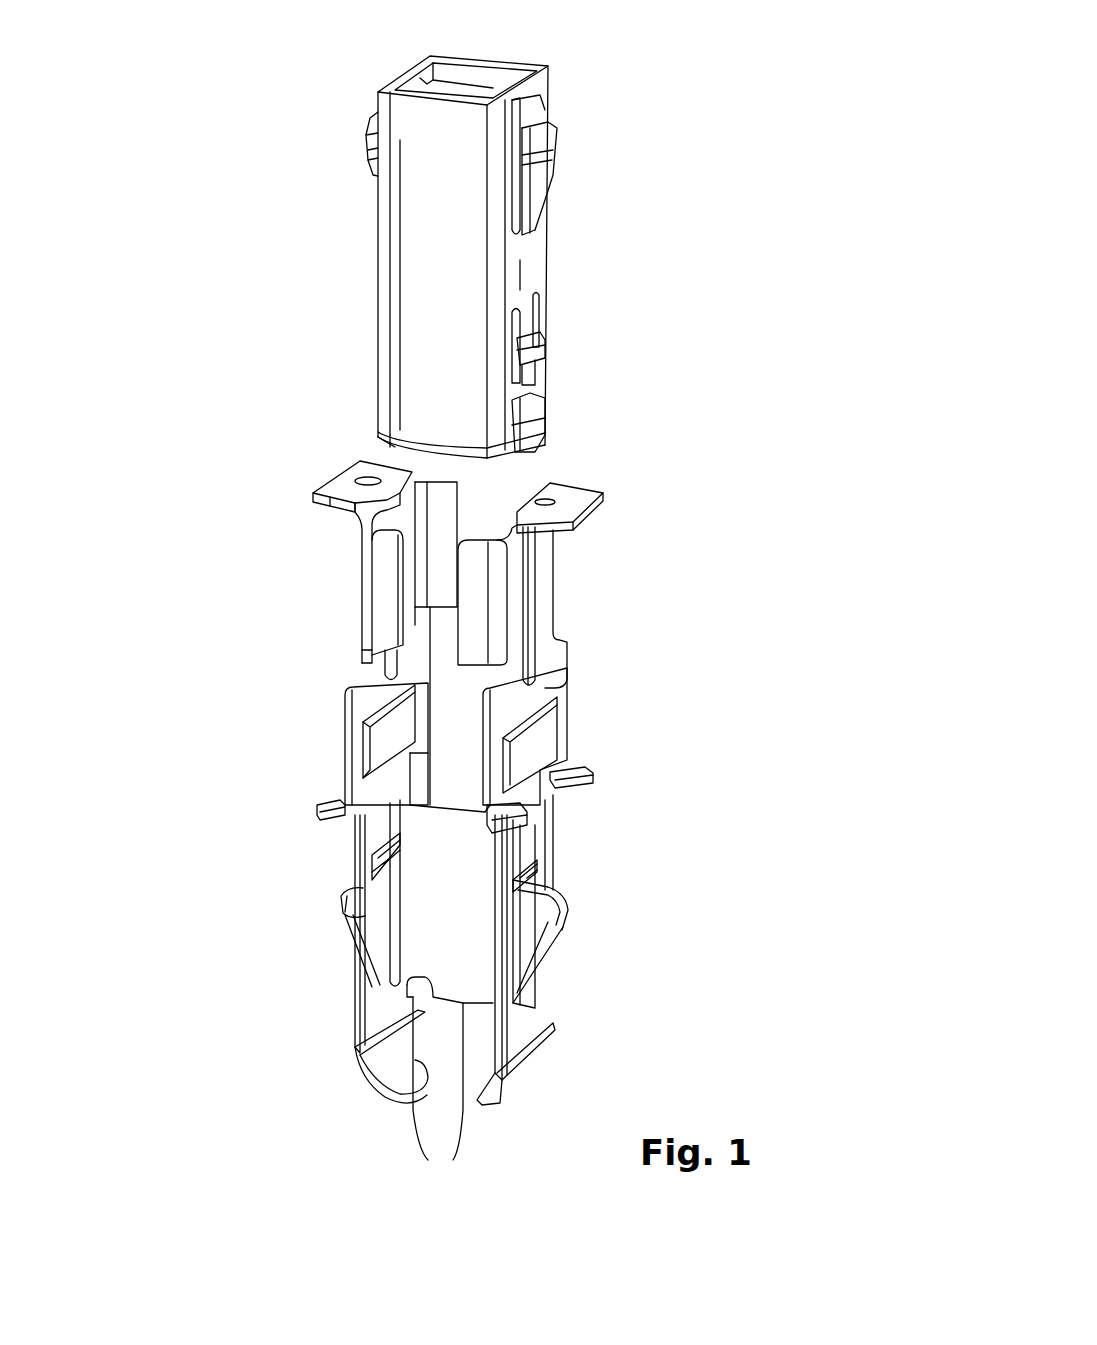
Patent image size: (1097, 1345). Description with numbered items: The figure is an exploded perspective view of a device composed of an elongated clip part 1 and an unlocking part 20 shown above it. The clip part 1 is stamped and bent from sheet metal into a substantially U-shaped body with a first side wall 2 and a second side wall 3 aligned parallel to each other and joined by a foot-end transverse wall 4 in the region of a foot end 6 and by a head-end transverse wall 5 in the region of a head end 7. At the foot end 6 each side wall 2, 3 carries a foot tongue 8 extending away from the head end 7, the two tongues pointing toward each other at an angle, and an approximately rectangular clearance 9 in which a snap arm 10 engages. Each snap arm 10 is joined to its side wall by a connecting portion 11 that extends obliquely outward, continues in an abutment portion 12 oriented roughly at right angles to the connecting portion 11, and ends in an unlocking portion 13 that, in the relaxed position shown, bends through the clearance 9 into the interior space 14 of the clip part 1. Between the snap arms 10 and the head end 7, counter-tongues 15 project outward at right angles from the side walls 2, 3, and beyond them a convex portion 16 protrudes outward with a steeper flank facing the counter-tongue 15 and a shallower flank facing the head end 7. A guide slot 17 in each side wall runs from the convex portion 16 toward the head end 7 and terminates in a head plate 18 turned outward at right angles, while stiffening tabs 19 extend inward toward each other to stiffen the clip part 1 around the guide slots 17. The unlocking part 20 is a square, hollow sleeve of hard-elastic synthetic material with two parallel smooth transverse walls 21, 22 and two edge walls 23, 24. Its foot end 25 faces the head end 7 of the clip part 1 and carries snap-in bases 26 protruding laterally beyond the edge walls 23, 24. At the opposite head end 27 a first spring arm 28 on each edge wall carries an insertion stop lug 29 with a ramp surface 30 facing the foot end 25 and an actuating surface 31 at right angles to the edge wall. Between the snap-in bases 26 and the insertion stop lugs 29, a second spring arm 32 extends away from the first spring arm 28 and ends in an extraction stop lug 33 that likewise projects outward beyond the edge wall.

The clip part 1 is at (173, 708).
The first side wall 2 is at (363, 683).
The second side wall 3 is at (525, 697).
The foot-end transverse wall 4 is at (448, 1050).
The head-end transverse wall 5 is at (470, 497).
The foot end 6 is at (262, 1088).
The head end 7 is at (230, 492).
The foot tongue 8 is at (430, 1067).
The clearance 9 is at (387, 835).
The snap arm 10 is at (335, 907).
The connecting portion 11 is at (374, 1047).
The abutment portion 12 is at (342, 884).
The unlocking portion 13 is at (353, 943).
The interior space 14 is at (457, 775).
The counter-tongue 15 is at (337, 739).
The convex portion 16 is at (383, 745).
The guide slot 17 is at (362, 650).
The head plate 18 is at (343, 487).
The stiffening tab 19 is at (381, 582).
The unlocking part 20 is at (170, 246).
The transverse wall 21 is at (410, 237).
The transverse wall 22 is at (483, 73).
The edge wall 23 is at (425, 77).
The edge wall 24 is at (540, 250).
The foot end 25 is at (366, 433).
The snap-in base 26 is at (368, 408).
The head end 27 is at (366, 116).
The first spring arm 28 is at (372, 198).
The insertion stop lug 29 is at (367, 128).
The ramp surface 30 is at (367, 150).
The actuating surface 31 is at (343, 92).
The second spring arm 32 is at (373, 308).
The extraction stop lug 33 is at (371, 345).